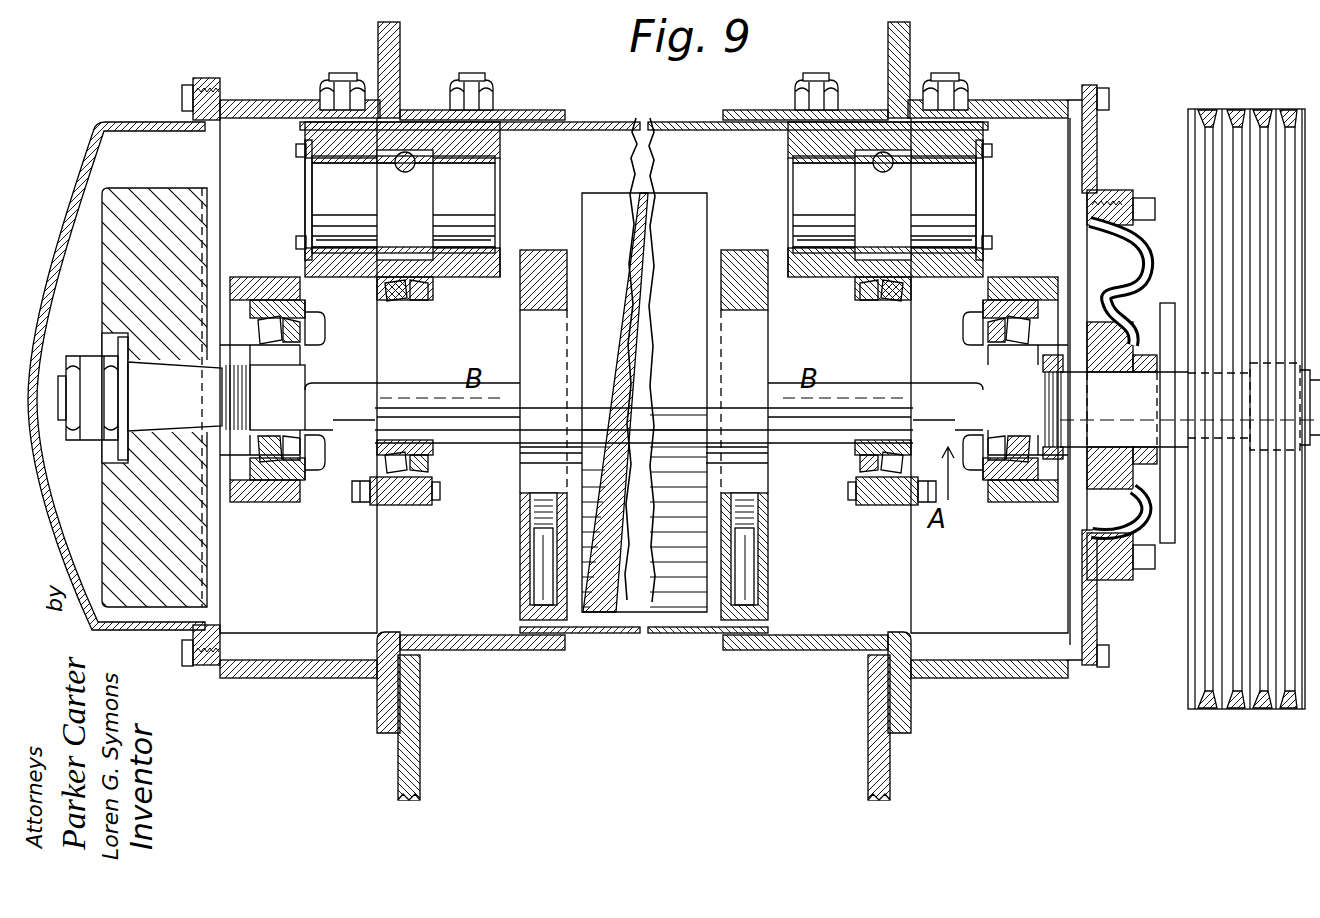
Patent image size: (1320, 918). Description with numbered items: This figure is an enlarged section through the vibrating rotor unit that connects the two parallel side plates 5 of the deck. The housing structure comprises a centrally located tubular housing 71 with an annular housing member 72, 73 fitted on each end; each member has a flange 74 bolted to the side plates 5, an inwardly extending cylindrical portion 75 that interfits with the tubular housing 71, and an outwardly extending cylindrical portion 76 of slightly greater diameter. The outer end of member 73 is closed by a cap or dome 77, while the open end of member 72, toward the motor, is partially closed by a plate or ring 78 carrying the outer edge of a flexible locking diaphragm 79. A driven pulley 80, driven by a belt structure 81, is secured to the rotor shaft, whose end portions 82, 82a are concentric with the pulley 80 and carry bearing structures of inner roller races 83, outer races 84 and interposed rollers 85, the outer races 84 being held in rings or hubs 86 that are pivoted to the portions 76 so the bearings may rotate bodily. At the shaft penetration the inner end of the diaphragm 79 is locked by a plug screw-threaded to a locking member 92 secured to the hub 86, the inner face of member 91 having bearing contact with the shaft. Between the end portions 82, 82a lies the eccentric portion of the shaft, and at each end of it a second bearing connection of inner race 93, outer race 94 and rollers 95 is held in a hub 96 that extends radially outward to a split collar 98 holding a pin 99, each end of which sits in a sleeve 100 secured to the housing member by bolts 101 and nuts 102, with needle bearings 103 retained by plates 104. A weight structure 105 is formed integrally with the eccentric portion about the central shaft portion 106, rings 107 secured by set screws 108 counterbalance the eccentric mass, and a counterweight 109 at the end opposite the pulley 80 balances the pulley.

The side plate 5 is at (421, 758).
The tubular housing 71 is at (658, 645).
The annular housing member 72 is at (841, 657).
The annular housing member 73 is at (467, 650).
The flange 74 is at (395, 735).
The inwardly extending cylindrical portion 75 is at (553, 116).
The outwardly extending cylindrical portion 76 is at (300, 678).
The cap or dome 77 is at (68, 205).
The plate or ring 78 is at (1097, 628).
The flexible locking diaphragm 79 is at (1100, 533).
The driven pulley 80 is at (1188, 668).
The belt structure 81 is at (1275, 109).
The end portion of rotor shaft 82 is at (1030, 402).
The end portion of rotor shaft 82a is at (300, 388).
The inner roller race 83 is at (268, 430).
The outer race 84 is at (308, 482).
The rollers 85 is at (290, 466).
The ring or hub 86 is at (252, 502).
The member 91 is at (1165, 312).
The locking member 92 is at (1090, 326).
The inner race 93 is at (380, 446).
The outer race 94 is at (425, 506).
The rollers 95 is at (428, 290).
The hub 96 is at (380, 514).
The split collar 98 is at (388, 156).
The pin 99 is at (326, 200).
The sleeve 100 is at (348, 272).
The bolt 101 is at (337, 72).
The nut 102 is at (325, 92).
The needle bearing 103 is at (318, 166).
The retaining plate 104 is at (308, 160).
The weight structure 105 is at (668, 200).
The central portion of the shaft 106 is at (543, 397).
The ring 107 is at (545, 250).
The set screw 108 is at (536, 572).
The counterweight 109 is at (150, 205).